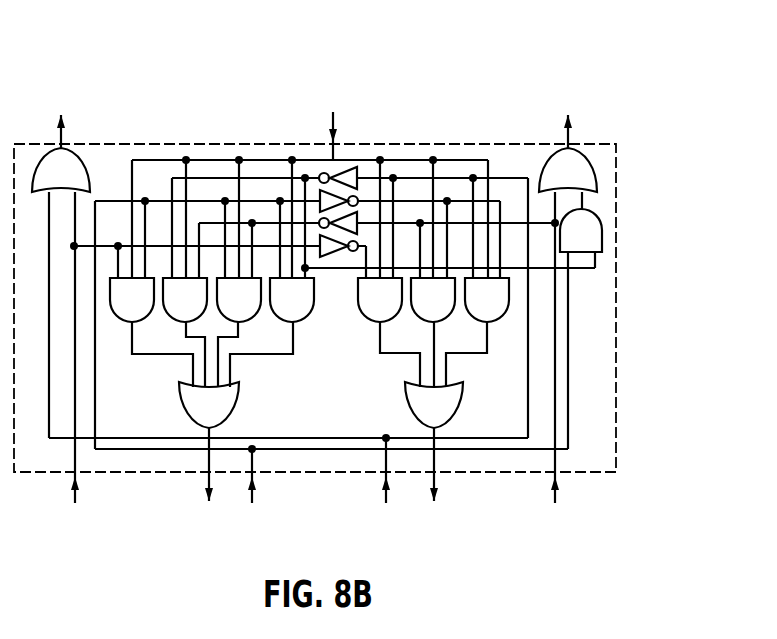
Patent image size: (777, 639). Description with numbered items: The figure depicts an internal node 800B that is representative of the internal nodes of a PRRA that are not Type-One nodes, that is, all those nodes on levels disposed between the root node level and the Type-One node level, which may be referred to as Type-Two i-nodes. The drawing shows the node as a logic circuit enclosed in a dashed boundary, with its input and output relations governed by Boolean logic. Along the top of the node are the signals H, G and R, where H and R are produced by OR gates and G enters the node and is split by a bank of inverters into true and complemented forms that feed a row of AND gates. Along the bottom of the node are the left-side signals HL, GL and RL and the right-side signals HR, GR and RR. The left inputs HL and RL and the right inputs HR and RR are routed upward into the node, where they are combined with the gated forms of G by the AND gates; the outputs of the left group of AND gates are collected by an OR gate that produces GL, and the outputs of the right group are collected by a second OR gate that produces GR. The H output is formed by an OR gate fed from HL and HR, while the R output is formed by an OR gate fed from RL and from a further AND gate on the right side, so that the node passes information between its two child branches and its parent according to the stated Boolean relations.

The internal node 800B is at (656, 89).
The H output (OR gate) H is at (61, 134).
The G input G is at (333, 118).
The R output (OR gate) R is at (568, 134).
The H left input HL is at (73, 367).
The G left output (OR gate) GL is at (209, 462).
The R left input RL is at (248, 494).
The H right input HR is at (384, 488).
The G right output (OR gate) GR is at (434, 462).
The R right input RR is at (554, 367).